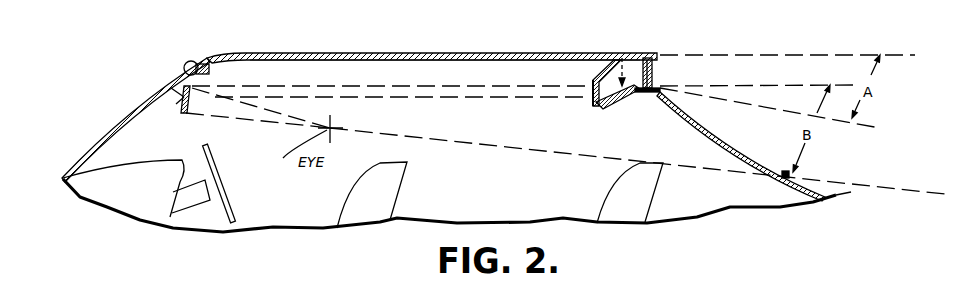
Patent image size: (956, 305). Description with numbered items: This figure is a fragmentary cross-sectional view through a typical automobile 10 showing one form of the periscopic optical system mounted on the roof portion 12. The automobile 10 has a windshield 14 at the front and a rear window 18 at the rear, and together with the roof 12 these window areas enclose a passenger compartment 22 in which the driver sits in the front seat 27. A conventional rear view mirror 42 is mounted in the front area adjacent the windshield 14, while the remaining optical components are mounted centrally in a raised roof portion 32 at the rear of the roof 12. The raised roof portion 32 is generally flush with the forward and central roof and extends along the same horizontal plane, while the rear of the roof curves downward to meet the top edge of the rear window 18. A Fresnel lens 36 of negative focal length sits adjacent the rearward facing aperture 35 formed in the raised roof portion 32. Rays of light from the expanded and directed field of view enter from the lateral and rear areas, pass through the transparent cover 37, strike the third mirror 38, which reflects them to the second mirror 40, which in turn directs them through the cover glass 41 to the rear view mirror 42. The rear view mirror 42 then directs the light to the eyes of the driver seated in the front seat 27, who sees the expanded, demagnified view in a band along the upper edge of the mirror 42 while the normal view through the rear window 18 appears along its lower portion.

The automobile 10 is at (226, 45).
The roof portion 12 is at (287, 54).
The windshield 14 is at (124, 112).
The rear window 18 is at (722, 137).
The passenger compartment 22 is at (360, 79).
The front seat 27 is at (388, 182).
The raised roof portion 32 is at (621, 57).
The rearward facing aperture 35 is at (650, 57).
The Fresnel lens 36 is at (633, 91).
The transparent cover 37 is at (655, 72).
The third mirror 38 is at (613, 61).
The second mirror 40 is at (602, 106).
The cover glass 41 is at (593, 94).
The rear view mirror 42 is at (184, 112).